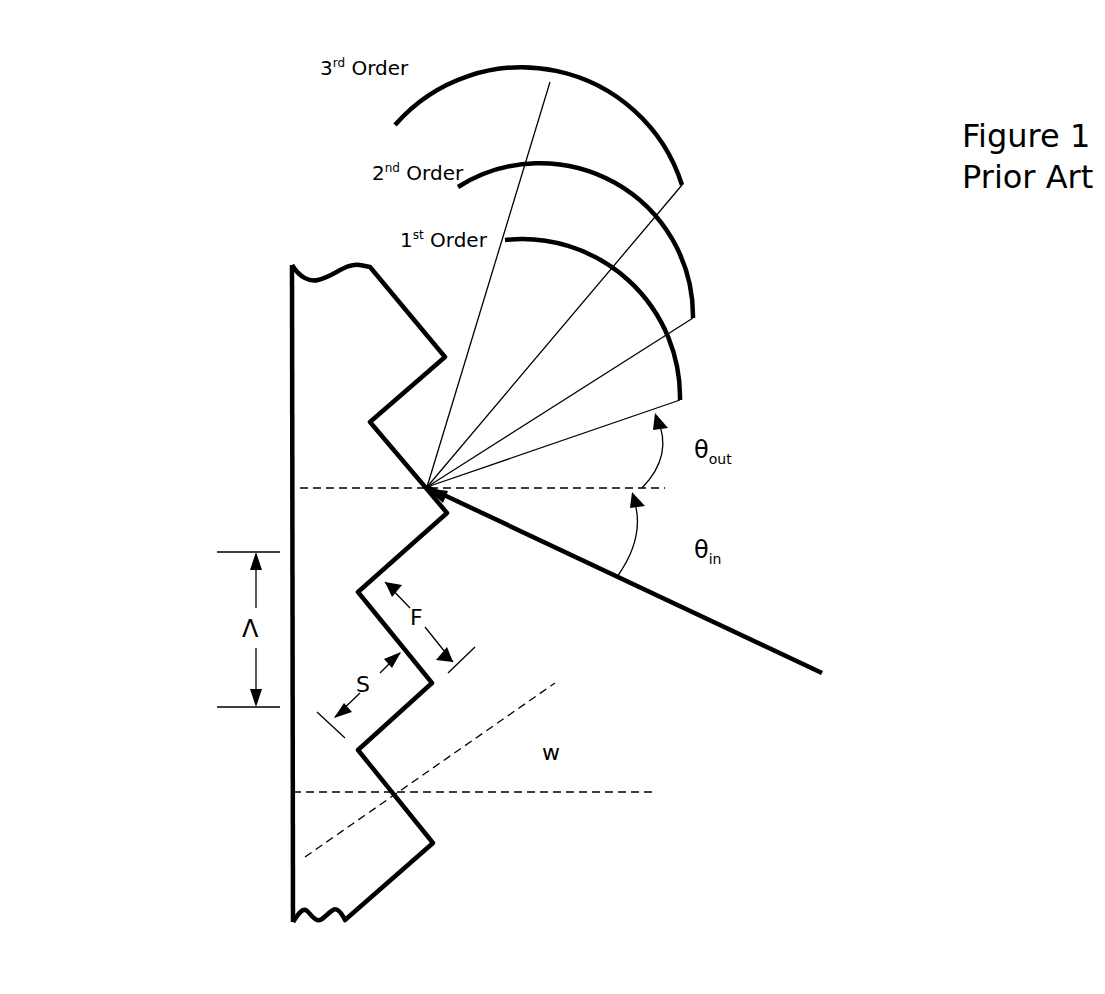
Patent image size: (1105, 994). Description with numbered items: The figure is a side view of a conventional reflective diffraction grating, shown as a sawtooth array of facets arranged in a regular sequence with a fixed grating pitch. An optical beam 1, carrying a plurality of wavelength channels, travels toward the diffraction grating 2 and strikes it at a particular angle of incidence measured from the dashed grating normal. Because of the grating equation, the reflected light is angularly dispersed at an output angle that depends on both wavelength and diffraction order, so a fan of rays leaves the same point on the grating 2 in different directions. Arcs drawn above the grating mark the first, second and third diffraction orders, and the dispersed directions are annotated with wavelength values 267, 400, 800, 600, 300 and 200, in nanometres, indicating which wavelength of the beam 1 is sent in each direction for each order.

The optical beam 1 is at (772, 645).
The diffraction grating 2 is at (322, 370).
The third order diffraction arc (267 nm) 267 is at (538, 108).
The second order diffraction arc (400 nm) 400 is at (560, 312).
The first order diffraction arc (800 nm) 800 is at (553, 284).
The 600 nm diffracted ray 600 is at (560, 397).
The 300 nm diffracted ray 300 is at (554, 336).
The 200 nm diffraction arc end points 200 is at (733, 279).